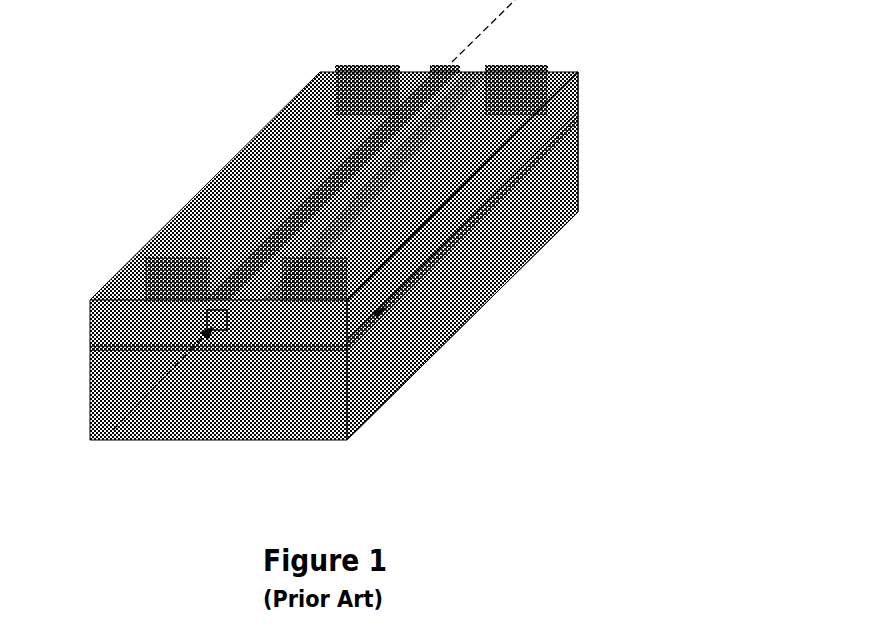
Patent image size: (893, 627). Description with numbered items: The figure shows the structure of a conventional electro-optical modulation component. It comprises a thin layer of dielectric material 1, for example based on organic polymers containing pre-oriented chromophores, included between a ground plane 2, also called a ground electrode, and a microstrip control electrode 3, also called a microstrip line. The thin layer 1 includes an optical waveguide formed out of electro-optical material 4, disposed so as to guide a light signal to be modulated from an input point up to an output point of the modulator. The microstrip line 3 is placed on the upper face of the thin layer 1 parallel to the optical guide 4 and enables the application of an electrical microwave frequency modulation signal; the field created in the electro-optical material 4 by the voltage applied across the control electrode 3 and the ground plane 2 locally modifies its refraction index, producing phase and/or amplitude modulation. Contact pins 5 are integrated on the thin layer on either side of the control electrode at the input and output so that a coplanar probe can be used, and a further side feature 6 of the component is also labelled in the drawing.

The thin layer of dielectric material 1 is at (103, 318).
The ground plane 2 is at (97, 345).
The microstrip control electrode 3 is at (310, 195).
The optical waveguide formed out of electro-optical material 4 is at (228, 334).
The contact pins 5 is at (360, 95).
The side facet 6 is at (357, 389).